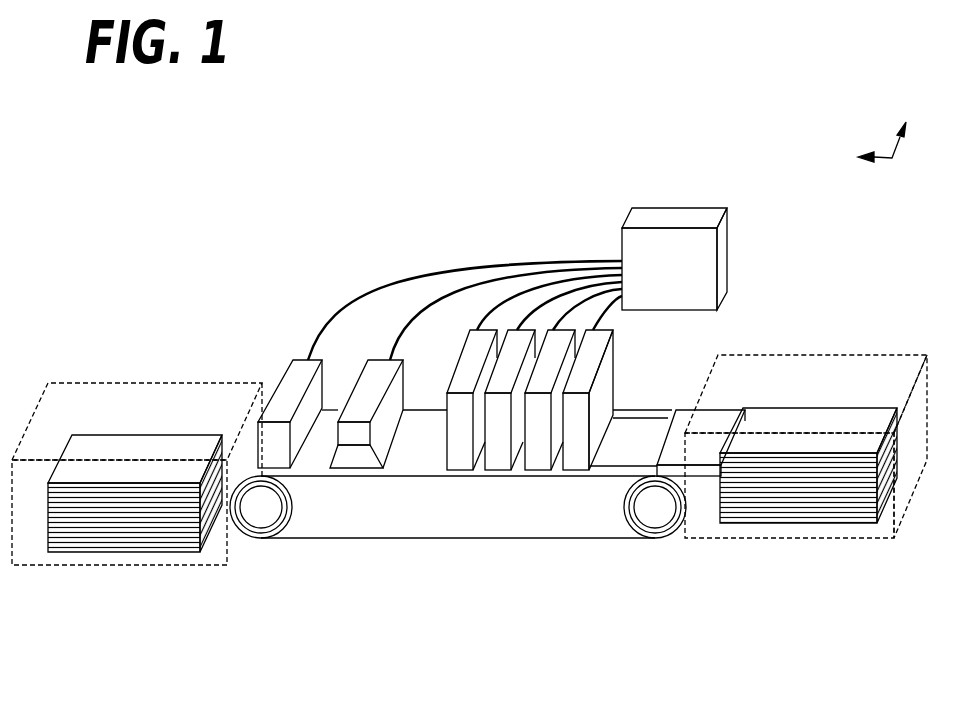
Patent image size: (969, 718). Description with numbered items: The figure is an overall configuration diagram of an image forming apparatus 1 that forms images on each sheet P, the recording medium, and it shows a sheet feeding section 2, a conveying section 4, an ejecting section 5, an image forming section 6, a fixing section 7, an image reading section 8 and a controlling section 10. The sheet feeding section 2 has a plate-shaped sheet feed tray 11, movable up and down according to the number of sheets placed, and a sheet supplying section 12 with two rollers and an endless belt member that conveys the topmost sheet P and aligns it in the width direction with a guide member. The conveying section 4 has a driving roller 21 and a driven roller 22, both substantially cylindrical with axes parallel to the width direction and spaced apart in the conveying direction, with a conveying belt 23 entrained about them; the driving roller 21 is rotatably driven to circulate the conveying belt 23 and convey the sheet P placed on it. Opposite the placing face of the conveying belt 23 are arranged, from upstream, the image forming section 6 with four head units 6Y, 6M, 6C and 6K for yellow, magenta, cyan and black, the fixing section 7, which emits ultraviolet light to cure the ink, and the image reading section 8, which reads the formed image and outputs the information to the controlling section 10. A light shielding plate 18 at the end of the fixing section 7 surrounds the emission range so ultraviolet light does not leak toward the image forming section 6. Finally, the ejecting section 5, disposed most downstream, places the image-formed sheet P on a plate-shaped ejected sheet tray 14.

The image forming apparatus 1 is at (809, 106).
The sheet feeding section 2 is at (873, 354).
The conveying section 4 is at (635, 574).
The ejecting section 5 is at (148, 381).
The image forming section 6 is at (437, 648).
The head unit 6K is at (458, 471).
The head unit 6C is at (497, 471).
The head unit 6M is at (537, 471).
The head unit 6Y is at (577, 471).
The fixing section 7 is at (378, 357).
The image reading section 8 is at (304, 357).
The controlling section 10 is at (678, 208).
The sheet feed tray 11 is at (778, 525).
The sheet supplying section 12 is at (674, 409).
The ejected sheet tray 14 is at (80, 553).
The light shielding plate 18 is at (412, 398).
The driving roller 21 is at (256, 515).
The driven roller 22 is at (648, 520).
The conveying belt 23 is at (428, 477).
The sheet P is at (88, 458).